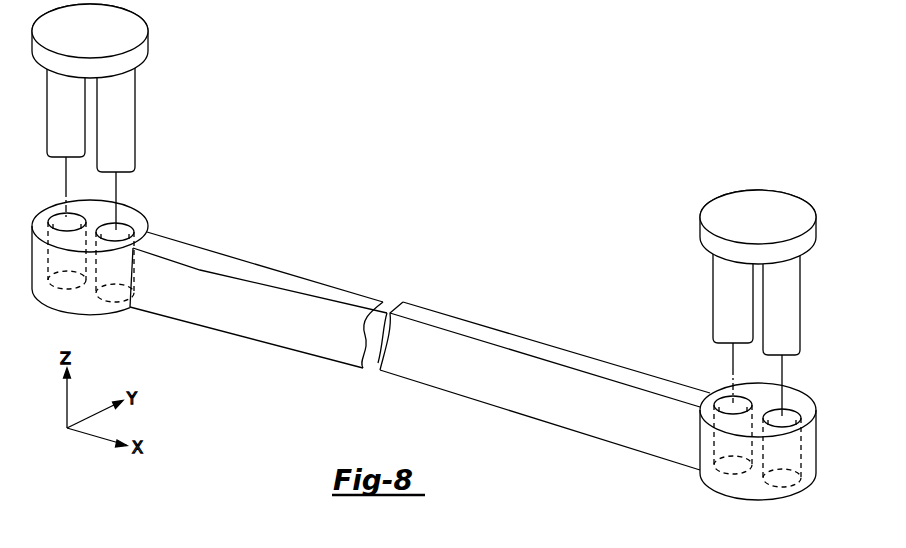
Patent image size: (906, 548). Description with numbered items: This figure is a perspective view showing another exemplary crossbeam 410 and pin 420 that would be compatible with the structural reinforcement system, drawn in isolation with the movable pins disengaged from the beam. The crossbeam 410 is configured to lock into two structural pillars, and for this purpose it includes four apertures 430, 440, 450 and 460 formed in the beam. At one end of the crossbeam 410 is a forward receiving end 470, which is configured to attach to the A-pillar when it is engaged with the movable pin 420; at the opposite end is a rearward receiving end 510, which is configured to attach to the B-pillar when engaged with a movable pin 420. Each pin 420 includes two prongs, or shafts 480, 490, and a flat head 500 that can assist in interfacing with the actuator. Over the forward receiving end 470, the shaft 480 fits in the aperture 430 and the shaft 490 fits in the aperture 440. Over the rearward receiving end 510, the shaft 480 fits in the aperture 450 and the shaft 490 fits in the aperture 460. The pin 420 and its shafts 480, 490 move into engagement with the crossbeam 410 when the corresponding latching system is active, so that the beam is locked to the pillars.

The crossbeam 410 is at (303, 286).
The pin 420 is at (427, 208).
The aperture 430 is at (48, 218).
The aperture 440 is at (135, 224).
The aperture 450 is at (724, 385).
The aperture 460 is at (813, 397).
The forward receiving end 470 is at (132, 338).
The shaft 480 is at (57, 105).
The shaft 490 is at (135, 125).
The flat head 500 is at (135, 25).
The rearward receiving end 510 is at (688, 486).